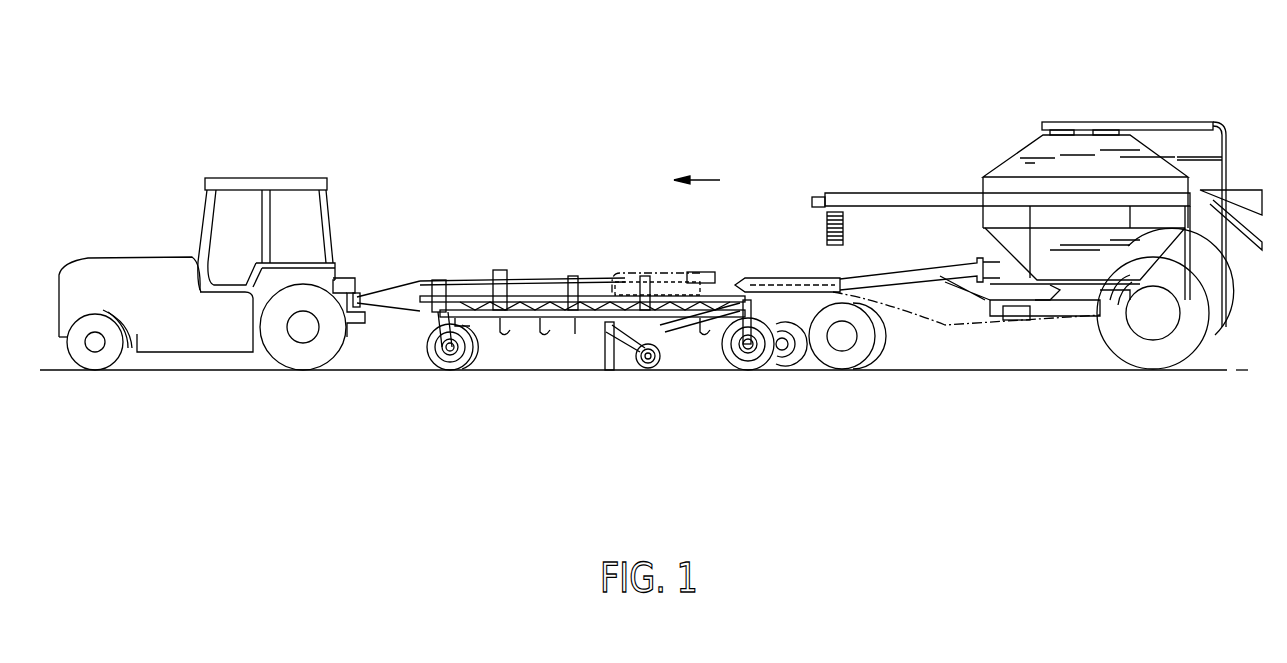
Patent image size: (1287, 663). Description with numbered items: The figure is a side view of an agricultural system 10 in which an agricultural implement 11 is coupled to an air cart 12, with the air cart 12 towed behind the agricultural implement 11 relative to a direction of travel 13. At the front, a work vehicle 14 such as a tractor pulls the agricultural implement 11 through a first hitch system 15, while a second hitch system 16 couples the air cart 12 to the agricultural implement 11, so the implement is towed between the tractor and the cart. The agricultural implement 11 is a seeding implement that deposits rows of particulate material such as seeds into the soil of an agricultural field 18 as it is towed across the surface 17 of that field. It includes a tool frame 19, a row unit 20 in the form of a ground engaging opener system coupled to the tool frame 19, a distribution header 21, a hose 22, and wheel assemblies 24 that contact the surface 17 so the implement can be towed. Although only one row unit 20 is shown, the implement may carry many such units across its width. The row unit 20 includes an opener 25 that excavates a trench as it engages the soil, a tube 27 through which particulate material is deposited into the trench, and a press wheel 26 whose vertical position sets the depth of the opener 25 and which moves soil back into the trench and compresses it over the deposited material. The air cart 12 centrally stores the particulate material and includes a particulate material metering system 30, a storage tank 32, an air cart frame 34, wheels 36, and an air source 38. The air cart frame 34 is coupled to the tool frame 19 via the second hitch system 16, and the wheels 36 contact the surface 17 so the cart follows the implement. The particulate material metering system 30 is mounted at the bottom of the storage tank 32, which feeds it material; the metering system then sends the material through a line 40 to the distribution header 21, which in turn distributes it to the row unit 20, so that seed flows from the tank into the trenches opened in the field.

The agricultural system 10 is at (1039, 215).
The agricultural implement 11 is at (596, 325).
The air cart 12 is at (1010, 121).
The direction of travel 13 is at (703, 178).
The work vehicle 14 is at (261, 158).
The first hitch system 15 is at (382, 283).
The second hitch system 16 is at (738, 283).
The surface 17 is at (1008, 372).
The agricultural field 18 is at (853, 478).
The tool frame 19 is at (607, 290).
The row unit 20 is at (600, 365).
The distribution header 21 is at (700, 270).
The hose 22 is at (645, 273).
The wheel assemblies 24 is at (440, 372).
The opener 25 is at (590, 352).
The press wheel 26 is at (660, 362).
The tube 27 is at (640, 380).
The particulate material metering system 30 is at (893, 350).
The storage tank 32 is at (1035, 155).
The air cart frame 34 is at (895, 268).
The wheels 36 is at (1150, 372).
The air source 38 is at (1205, 265).
The line 40 is at (945, 330).